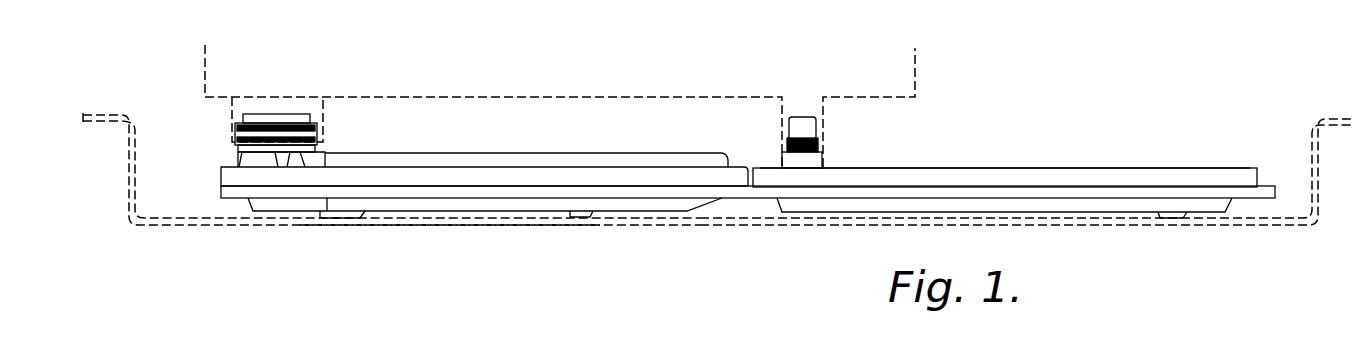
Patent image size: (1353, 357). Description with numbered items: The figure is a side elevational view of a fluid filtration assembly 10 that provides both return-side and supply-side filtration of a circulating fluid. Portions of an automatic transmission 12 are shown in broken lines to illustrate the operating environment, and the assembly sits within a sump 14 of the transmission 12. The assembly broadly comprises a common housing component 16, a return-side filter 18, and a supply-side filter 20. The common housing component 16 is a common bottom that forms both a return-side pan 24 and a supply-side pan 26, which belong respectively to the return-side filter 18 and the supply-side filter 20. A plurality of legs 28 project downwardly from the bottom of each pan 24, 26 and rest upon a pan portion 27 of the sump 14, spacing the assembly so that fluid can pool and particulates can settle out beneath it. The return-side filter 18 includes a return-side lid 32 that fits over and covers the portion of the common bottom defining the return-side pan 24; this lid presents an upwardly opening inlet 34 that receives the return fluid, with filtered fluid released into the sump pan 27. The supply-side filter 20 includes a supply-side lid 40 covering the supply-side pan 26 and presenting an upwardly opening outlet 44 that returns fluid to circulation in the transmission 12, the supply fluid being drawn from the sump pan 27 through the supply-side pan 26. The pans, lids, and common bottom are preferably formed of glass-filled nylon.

The fluid filtration assembly 10 is at (1025, 140).
The transmission 12 is at (199, 60).
The sump 14 is at (153, 199).
The common housing component 16 is at (751, 192).
The return-side filter 18 is at (1202, 166).
The supply-side filter 20 is at (672, 148).
The return-side pan 24 is at (1082, 208).
The supply-side pan 26 is at (482, 208).
The pan portion 27 is at (207, 225).
The legs 28 is at (327, 221).
The return-side lid 32 is at (875, 172).
The inlet 34 is at (805, 123).
The supply-side lid 40 is at (473, 158).
The outlet 44 is at (299, 116).